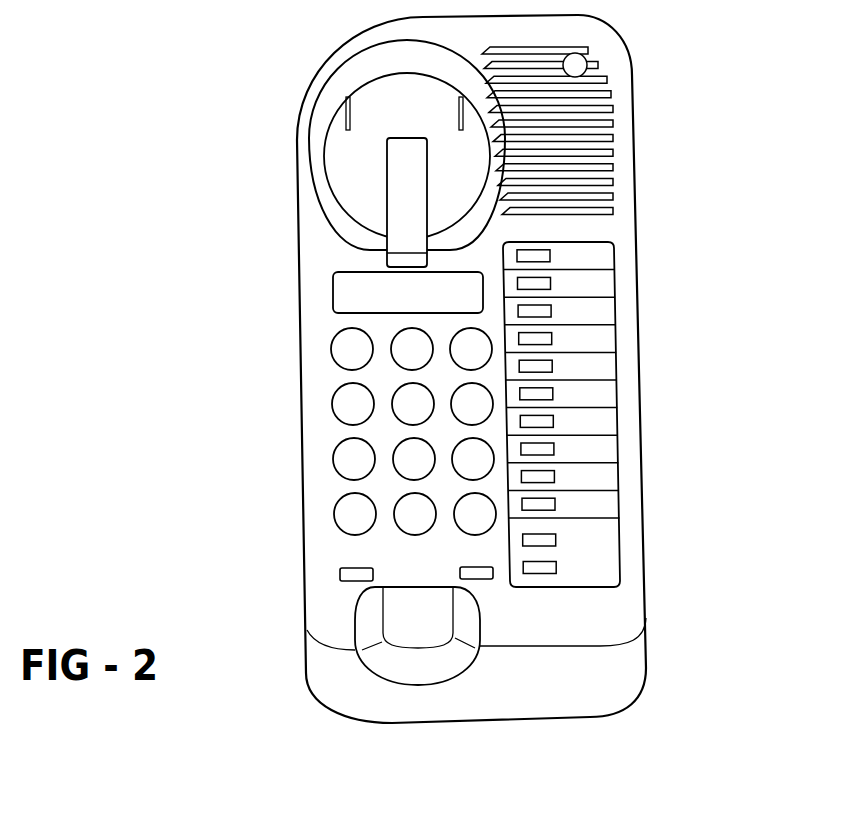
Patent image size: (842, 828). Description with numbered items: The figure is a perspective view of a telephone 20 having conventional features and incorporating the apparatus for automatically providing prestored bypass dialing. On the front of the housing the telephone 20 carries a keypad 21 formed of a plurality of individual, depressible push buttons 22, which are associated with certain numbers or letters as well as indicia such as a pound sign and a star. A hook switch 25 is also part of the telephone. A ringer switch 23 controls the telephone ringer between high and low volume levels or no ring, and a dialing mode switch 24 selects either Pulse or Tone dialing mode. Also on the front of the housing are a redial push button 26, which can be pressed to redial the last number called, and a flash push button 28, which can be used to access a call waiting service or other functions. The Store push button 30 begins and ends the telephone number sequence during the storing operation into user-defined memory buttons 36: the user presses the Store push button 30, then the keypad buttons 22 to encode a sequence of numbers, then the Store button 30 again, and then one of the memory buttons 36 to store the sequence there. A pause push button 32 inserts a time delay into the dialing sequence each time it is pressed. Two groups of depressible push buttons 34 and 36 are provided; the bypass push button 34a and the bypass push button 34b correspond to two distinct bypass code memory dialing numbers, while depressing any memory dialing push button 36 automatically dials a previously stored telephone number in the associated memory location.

The telephone 20 is at (331, 738).
The keypad 21 is at (355, 413).
The push button 22 is at (304, 358).
The ringer switch 23 is at (625, 617).
The dialing mode switch 24 is at (613, 504).
The hook switch 25 is at (403, 195).
The redial push button 26 is at (480, 575).
The flash push button 28 is at (342, 573).
The Store push button 30 is at (538, 573).
The pause push button 32 is at (540, 503).
The push buttons 34 is at (606, 267).
The bypass push button 34a is at (594, 248).
The bypass push button 34b is at (593, 292).
The user-defined memory buttons 36 is at (635, 420).